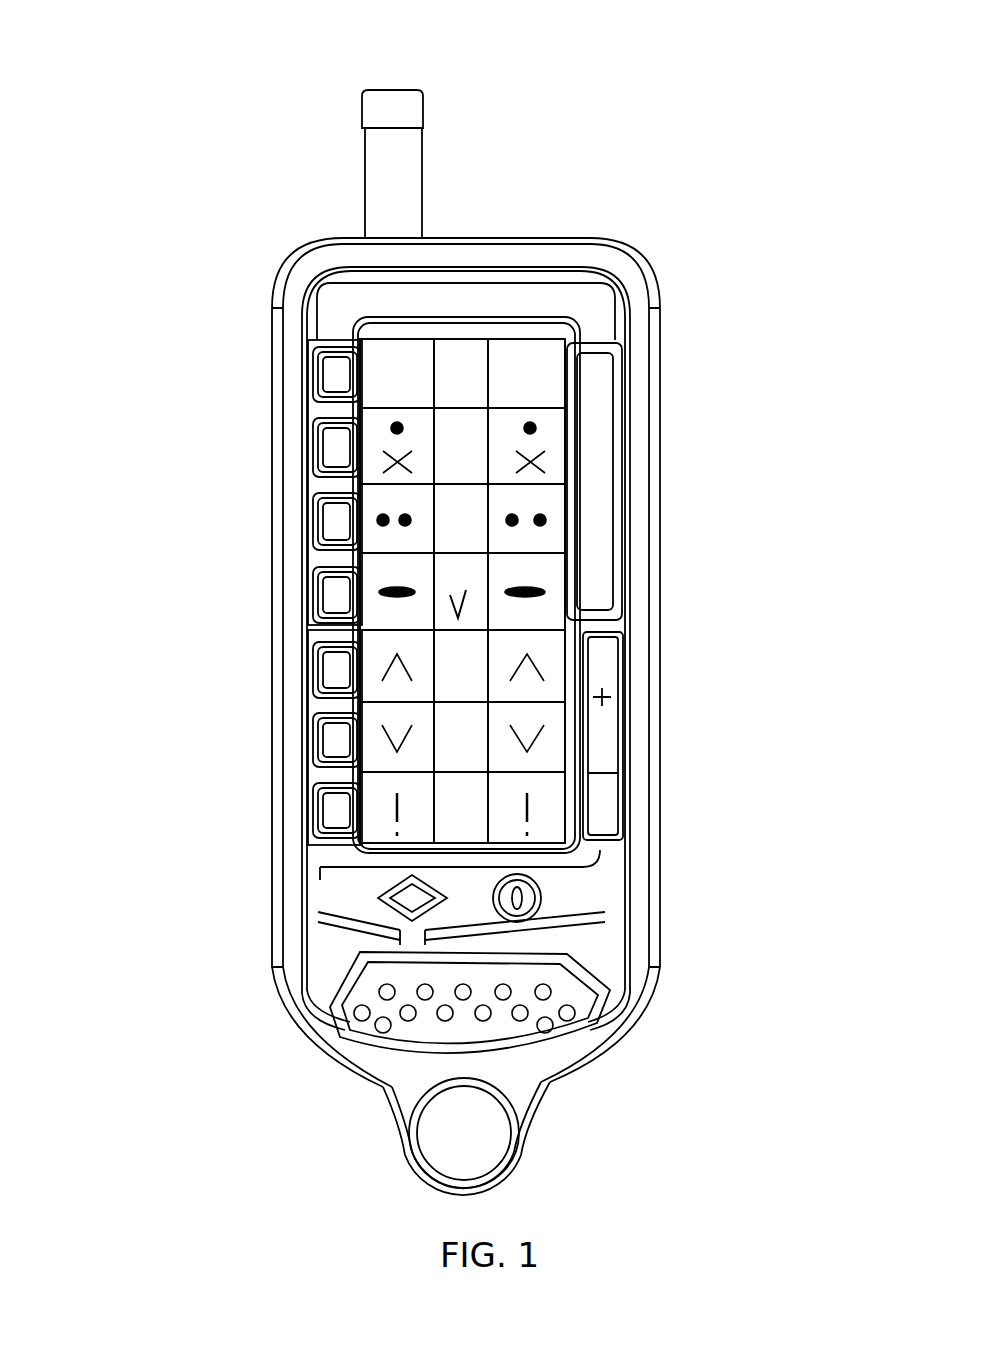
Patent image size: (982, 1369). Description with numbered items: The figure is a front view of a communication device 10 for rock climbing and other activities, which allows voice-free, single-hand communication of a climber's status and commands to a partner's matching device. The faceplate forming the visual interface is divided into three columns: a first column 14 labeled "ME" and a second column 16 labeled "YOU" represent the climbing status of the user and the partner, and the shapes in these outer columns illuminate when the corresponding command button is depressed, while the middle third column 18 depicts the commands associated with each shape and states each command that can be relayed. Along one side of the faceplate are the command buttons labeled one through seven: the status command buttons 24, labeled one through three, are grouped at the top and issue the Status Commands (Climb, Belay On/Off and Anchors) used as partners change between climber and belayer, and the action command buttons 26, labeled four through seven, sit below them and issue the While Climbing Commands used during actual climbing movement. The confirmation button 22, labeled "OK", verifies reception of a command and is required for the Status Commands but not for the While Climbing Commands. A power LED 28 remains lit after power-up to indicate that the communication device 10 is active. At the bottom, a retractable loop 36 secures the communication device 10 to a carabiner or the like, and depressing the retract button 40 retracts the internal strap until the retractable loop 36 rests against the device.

The communication device 10 is at (755, 60).
The first column 14 is at (402, 318).
The second column 16 is at (542, 318).
The third column 18 is at (472, 318).
The confirmation button 22 is at (628, 463).
The status command buttons 24 is at (308, 610).
The action command buttons 26 is at (308, 842).
The power LED 28 is at (556, 898).
The retractable loop 36 is at (545, 1153).
The retract button 40 is at (318, 1022).